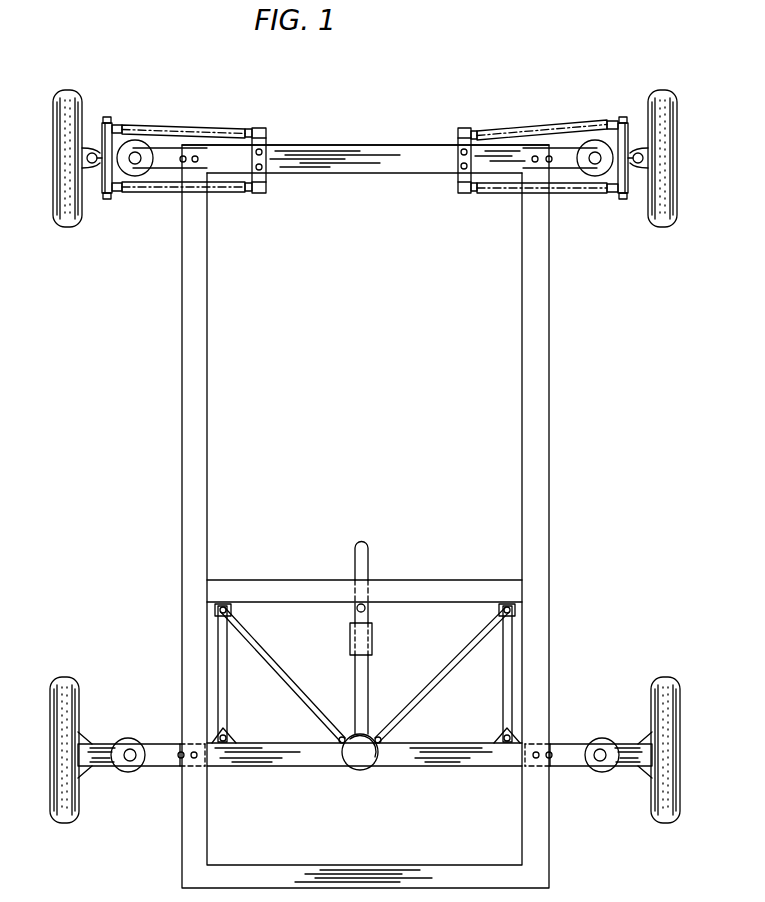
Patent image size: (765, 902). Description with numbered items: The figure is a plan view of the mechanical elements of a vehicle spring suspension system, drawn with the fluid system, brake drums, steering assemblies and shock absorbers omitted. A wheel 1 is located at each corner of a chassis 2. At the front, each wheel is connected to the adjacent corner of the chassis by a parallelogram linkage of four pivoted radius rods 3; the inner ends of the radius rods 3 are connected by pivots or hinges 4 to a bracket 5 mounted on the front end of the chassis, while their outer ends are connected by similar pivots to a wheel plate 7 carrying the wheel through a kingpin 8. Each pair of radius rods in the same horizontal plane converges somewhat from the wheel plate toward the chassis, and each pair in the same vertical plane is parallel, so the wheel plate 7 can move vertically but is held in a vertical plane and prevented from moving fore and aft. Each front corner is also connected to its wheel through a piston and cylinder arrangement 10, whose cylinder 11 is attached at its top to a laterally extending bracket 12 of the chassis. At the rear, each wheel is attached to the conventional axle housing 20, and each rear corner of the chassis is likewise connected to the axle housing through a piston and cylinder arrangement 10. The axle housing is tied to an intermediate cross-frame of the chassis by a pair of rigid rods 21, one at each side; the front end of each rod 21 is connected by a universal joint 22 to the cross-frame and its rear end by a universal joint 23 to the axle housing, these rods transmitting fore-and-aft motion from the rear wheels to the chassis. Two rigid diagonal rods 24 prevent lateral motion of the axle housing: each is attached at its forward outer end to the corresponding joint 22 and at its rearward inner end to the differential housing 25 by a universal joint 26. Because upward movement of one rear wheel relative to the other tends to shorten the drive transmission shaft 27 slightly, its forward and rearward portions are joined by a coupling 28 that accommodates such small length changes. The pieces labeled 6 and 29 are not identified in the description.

The wheel 1 is at (60, 92).
The chassis 2 is at (360, 147).
The radius rods 3 is at (163, 127).
The pivots or hinges 4 is at (260, 128).
The bracket 5 is at (270, 150).
The kingpin bolt 6 is at (106, 117).
The wheel plate 7 is at (105, 199).
The kingpin 8 is at (90, 152).
The piston and cylinder arrangement 10 is at (122, 140).
The cylinder 11 is at (128, 191).
The laterally extending bracket 12 is at (163, 758).
The axle housing 20 is at (419, 584).
The rigid rods 21 is at (227, 690).
The universal joint 22 is at (222, 605).
The universal joint 23 is at (231, 738).
The diagonal rods 24 is at (292, 684).
The differential housing 25 is at (360, 771).
The universal joint 26 is at (338, 738).
The drive transmission shaft 27 is at (355, 558).
The coupling 28 is at (373, 636).
The pin 29 is at (356, 611).